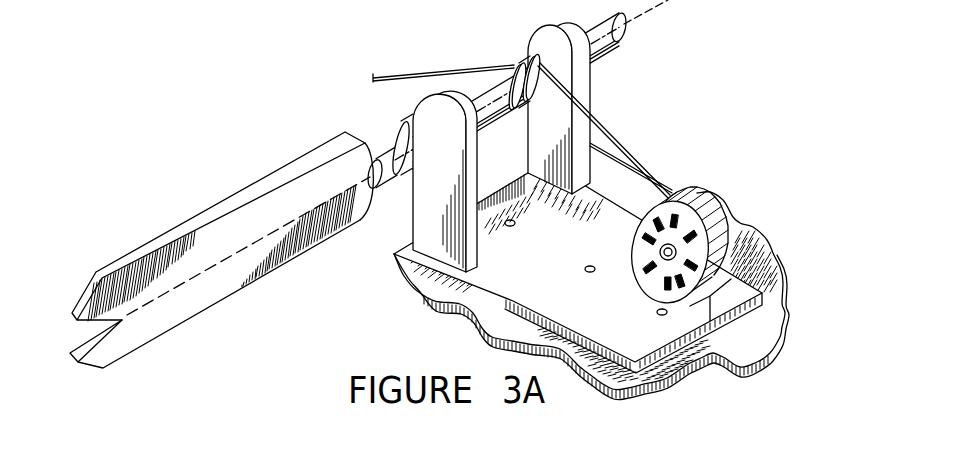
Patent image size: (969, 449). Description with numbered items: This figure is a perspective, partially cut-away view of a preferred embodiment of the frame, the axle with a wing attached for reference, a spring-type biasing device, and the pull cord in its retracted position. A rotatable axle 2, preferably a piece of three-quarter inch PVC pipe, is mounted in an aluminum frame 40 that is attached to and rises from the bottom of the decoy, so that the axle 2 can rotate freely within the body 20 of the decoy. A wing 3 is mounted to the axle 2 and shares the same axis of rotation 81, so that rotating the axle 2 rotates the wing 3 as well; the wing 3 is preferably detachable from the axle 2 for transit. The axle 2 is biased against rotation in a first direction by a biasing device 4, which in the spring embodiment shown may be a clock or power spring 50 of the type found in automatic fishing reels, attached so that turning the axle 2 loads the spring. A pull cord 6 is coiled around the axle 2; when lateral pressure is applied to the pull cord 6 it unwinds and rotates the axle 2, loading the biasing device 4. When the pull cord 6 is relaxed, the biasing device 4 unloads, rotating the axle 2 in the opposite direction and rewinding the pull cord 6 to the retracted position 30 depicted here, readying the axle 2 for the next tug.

The axle 2 is at (403, 137).
The wing 3 is at (283, 188).
The biasing device 4 is at (680, 303).
The pull cord 6 is at (374, 75).
The body 20 is at (703, 358).
The retracted position 30 is at (478, 29).
The frame 40 is at (392, 178).
The power spring 50 is at (680, 225).
The axis of rotation 81 is at (227, 257).